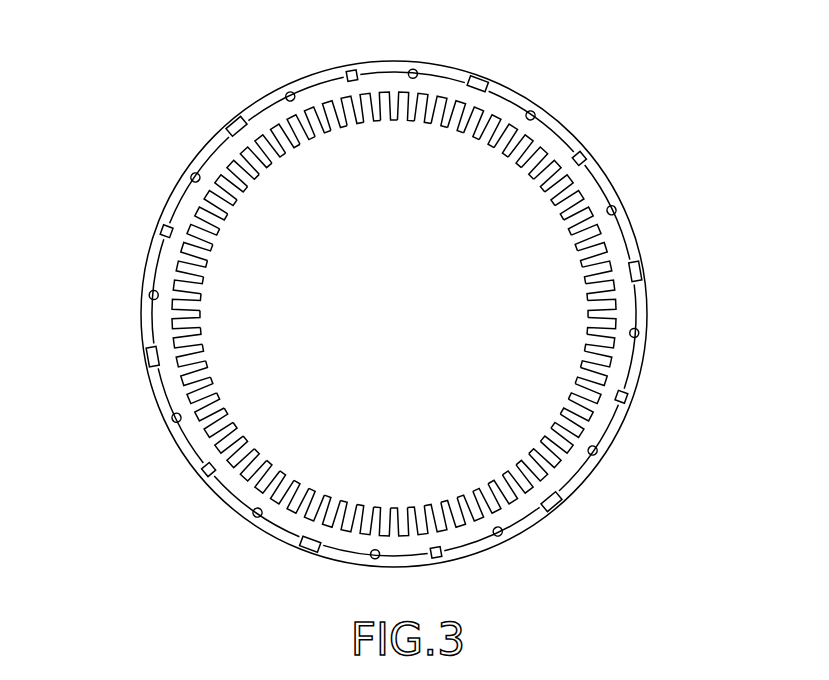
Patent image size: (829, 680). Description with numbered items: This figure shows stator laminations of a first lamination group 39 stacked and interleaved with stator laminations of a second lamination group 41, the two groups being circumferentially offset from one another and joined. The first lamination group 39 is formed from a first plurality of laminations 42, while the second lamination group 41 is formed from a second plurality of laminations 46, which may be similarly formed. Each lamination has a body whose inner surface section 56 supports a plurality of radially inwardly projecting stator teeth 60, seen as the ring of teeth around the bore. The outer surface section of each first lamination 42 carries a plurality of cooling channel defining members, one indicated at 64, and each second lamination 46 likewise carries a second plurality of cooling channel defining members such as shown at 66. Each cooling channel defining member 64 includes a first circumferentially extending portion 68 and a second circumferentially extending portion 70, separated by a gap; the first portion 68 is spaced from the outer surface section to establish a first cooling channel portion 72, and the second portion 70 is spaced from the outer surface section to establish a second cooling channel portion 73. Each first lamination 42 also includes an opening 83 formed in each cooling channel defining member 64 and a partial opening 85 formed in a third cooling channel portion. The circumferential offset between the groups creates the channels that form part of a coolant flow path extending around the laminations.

The first lamination group 39 is at (668, 366).
The second lamination group 41 is at (652, 216).
The first plurality of laminations 42 is at (138, 300).
The second plurality of laminations 46 is at (176, 188).
The inner surface section 56 is at (238, 328).
The stator teeth 60 is at (288, 162).
The cooling channel defining member 64 is at (527, 522).
The second plurality of cooling channel defining members 66 is at (447, 64).
The first circumferentially extending portion 68 is at (562, 503).
The second circumferentially extending portion 70 is at (442, 560).
The first cooling channel portion 72 is at (482, 76).
The second cooling channel portion 73 is at (350, 68).
The opening 83 is at (253, 515).
The partial opening 85 is at (175, 418).